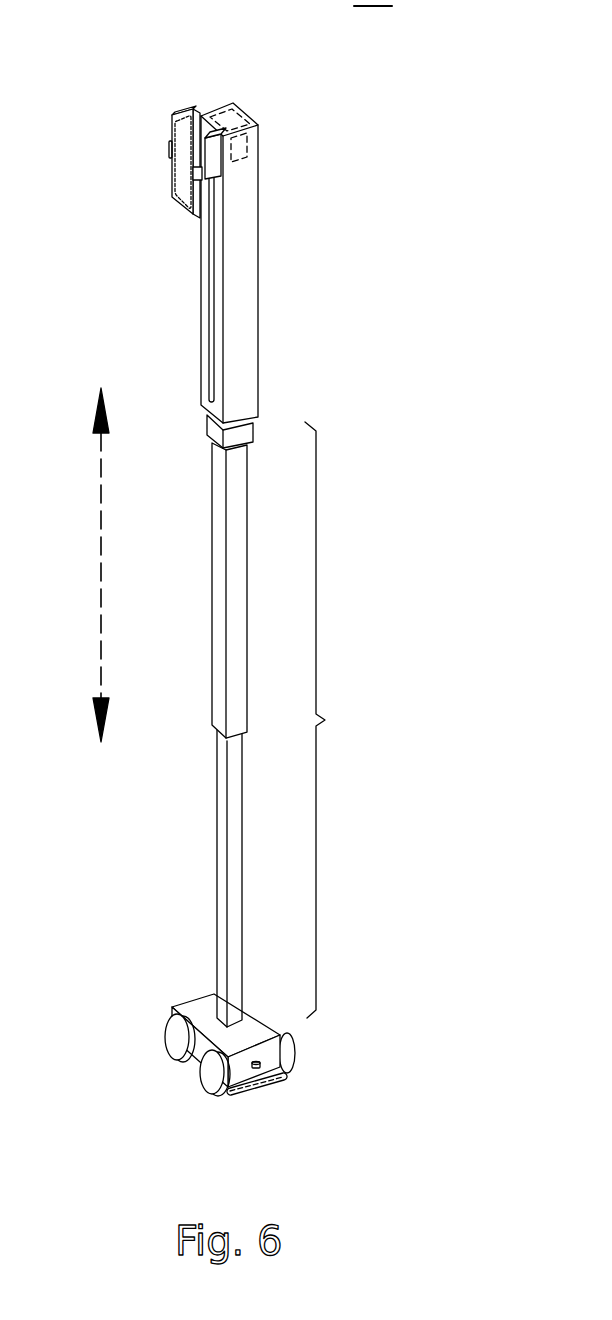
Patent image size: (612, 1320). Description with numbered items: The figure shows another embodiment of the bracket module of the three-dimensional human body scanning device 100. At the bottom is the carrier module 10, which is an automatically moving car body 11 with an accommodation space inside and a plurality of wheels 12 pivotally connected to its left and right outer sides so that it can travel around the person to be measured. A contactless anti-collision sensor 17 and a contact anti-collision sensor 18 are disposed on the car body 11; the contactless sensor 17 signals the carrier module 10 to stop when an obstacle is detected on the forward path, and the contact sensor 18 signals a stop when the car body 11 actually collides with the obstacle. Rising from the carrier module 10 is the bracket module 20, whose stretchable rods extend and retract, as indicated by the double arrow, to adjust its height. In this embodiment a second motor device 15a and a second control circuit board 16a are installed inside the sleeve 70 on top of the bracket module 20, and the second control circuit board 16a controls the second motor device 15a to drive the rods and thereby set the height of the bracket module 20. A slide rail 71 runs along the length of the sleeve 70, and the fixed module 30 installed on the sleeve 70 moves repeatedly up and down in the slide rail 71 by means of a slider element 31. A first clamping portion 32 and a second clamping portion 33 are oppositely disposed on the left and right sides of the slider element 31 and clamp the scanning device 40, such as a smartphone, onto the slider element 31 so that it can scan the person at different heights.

The three-dimensional human body scanning device 100 is at (379, 3).
The carrier module 10 is at (181, 989).
The car body 11 is at (195, 1057).
The wheels 12 is at (175, 1042).
The second motor device 15a is at (257, 143).
The second control circuit board 16a is at (238, 110).
The contactless anti-collision sensor 17 is at (263, 1067).
The contact anti-collision sensor 18 is at (253, 1088).
The bracket module 20 is at (335, 720).
The fixed module 30 is at (196, 104).
The slider element 31 is at (213, 168).
The first clamping portion 32 is at (171, 157).
The second clamping portion 33 is at (200, 170).
The scanning device 40 is at (180, 133).
The sleeve 70 is at (248, 298).
The slide rail 71 is at (210, 290).